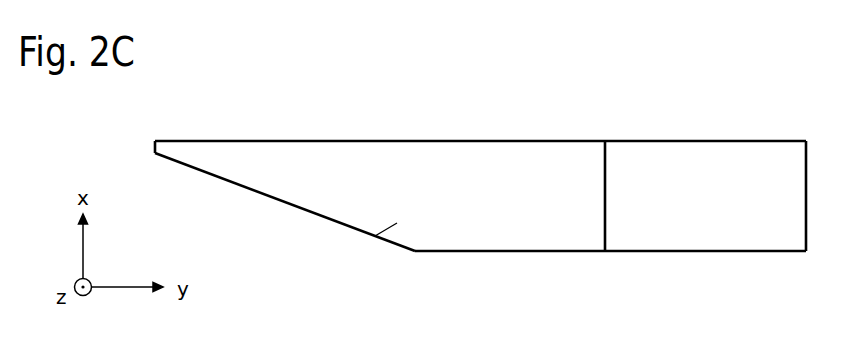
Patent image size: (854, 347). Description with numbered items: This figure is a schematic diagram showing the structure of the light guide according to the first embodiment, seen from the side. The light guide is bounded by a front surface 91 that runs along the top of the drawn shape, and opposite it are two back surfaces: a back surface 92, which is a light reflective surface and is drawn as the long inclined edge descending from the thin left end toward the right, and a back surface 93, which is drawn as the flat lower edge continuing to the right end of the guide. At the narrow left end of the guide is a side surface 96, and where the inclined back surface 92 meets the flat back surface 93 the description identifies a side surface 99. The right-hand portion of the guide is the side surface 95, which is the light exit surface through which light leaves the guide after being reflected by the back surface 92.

The front surface 91 is at (402, 140).
The back surface (light reflective surface) 92 is at (292, 203).
The back surface 93 is at (537, 252).
The side surface (light exit surface) 95 is at (732, 235).
The side surface 96 is at (153, 142).
The side surface 99 is at (375, 236).